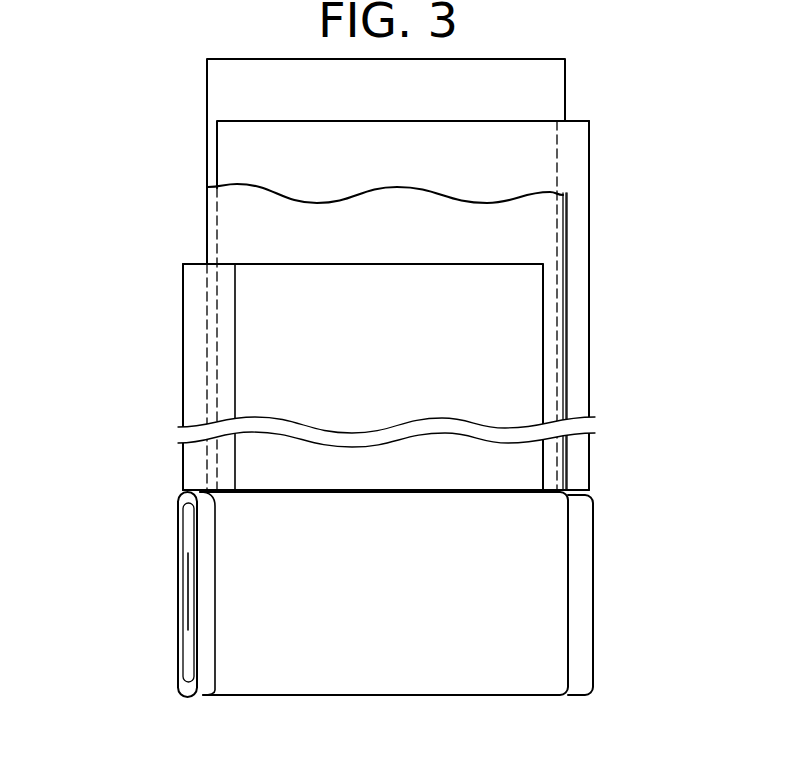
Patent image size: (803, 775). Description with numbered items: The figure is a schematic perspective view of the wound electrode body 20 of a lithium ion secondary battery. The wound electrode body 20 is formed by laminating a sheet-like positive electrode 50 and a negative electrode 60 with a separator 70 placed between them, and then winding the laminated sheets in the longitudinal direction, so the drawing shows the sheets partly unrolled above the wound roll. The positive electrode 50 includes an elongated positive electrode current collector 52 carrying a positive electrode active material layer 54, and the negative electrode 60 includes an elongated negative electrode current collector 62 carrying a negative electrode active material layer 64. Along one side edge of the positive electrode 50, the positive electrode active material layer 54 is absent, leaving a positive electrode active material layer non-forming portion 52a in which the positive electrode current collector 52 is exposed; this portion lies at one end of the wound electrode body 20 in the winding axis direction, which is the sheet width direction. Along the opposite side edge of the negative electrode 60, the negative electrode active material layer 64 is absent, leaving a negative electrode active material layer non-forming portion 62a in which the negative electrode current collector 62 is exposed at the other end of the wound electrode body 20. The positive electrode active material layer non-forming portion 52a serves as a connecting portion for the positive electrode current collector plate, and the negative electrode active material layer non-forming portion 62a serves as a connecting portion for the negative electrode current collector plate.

The wound electrode body 20 is at (452, 670).
The positive electrode 50 is at (182, 340).
The positive electrode current collector 52 is at (183, 410).
The positive electrode active material layer non-forming portion 52a is at (200, 378).
The positive electrode active material layer 54 is at (242, 281).
The negative electrode 60 is at (590, 206).
The negative electrode current collector 62 is at (590, 314).
The negative electrode active material layer non-forming portion 62a is at (577, 280).
The negative electrode active material layer 64 is at (552, 150).
The separator 70 is at (230, 87).